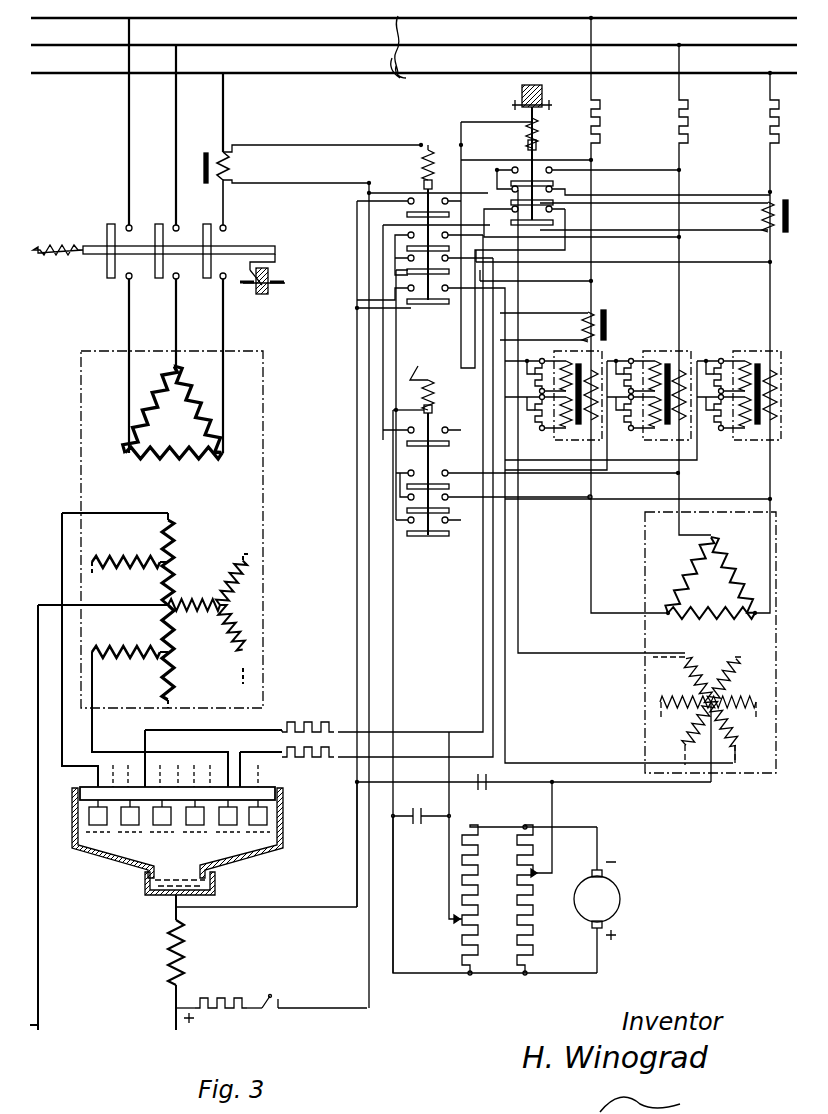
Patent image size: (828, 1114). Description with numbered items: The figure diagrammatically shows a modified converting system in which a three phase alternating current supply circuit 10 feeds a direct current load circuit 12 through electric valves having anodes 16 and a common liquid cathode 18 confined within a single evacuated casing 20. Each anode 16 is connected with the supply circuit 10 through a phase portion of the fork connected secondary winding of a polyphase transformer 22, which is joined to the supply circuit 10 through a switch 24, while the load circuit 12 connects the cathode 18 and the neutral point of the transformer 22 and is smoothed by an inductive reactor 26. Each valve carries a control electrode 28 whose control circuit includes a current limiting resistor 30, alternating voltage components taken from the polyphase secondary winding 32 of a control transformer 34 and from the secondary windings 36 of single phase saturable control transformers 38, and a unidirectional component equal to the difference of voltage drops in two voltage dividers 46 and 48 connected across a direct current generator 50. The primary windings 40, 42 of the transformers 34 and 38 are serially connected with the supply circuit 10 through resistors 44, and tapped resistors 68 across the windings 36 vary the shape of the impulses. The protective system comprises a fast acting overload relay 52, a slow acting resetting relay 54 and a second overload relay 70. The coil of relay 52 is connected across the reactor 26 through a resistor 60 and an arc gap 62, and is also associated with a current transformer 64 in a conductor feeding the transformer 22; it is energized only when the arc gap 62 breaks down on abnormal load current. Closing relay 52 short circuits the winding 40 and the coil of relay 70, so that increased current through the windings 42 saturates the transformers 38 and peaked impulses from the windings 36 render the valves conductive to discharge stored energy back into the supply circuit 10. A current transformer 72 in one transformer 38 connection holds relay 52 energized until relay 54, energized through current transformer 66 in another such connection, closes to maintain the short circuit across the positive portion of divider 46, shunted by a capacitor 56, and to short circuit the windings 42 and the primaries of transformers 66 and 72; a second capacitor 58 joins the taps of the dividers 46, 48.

The alternating current supply circuit 10 is at (414, 59).
The direct current load circuit 12 is at (168, 1020).
The anodes 16 is at (118, 832).
The common liquid cathode 18 is at (210, 893).
The evacuated casing 20 is at (270, 858).
The polyphase transformer 22 is at (264, 478).
The switch 24 is at (106, 260).
The inductive reactor 26 is at (170, 954).
The control electrode 28 is at (140, 834).
The current limiting resistor 30 is at (304, 774).
The polyphase secondary winding 32 is at (680, 736).
The polyphase control transformer 34 is at (745, 775).
The secondary windings 36 is at (742, 444).
The single phase saturable control transformers 38 is at (784, 452).
The primary winding 40 is at (733, 563).
The primary windings 42 is at (784, 383).
The resistors 44 is at (770, 115).
The voltage divider 46 is at (460, 934).
The voltage divider 48 is at (515, 934).
The direct current generator 50 is at (620, 899).
The overload relay 52 is at (442, 369).
The resetting relay 54 is at (540, 125).
The capacitor 56 is at (420, 818).
The second capacitor 58 is at (490, 784).
The resistor 60 is at (222, 1012).
The arc gap 62 is at (272, 986).
The current transformer 64 is at (209, 172).
The current transformer 66 is at (790, 198).
The resistors 68 is at (714, 444).
The second overload relay 70 is at (422, 165).
The current transformer 72 is at (608, 324).